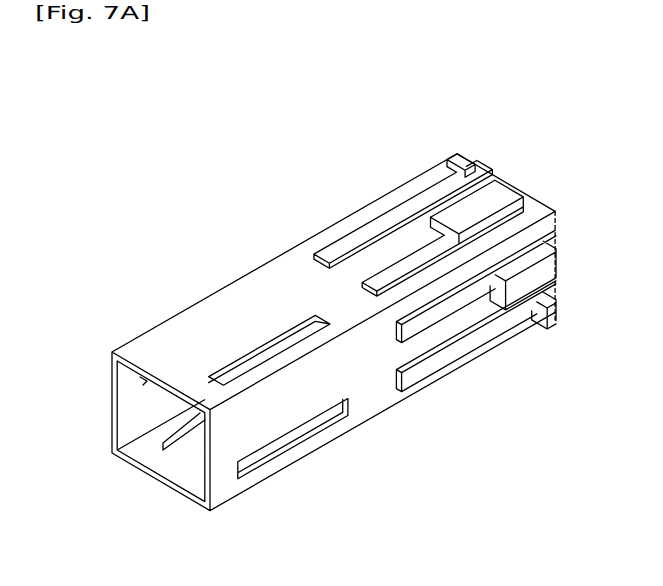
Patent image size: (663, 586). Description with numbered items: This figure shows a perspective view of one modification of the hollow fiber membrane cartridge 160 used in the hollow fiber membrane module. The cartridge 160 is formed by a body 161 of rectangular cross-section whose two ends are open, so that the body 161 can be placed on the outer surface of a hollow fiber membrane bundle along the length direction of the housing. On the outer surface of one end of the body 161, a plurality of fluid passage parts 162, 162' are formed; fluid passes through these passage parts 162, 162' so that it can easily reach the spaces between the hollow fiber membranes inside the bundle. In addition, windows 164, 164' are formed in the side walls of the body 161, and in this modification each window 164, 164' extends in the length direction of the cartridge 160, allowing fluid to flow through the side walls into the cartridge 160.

The hollow fiber membrane cartridge 160 is at (287, 182).
The body 161 is at (237, 280).
The fluid passage part 162 is at (418, 189).
The fluid passage part 162' is at (476, 310).
The window 164 is at (269, 434).
The slots (side) 164' is at (293, 439).